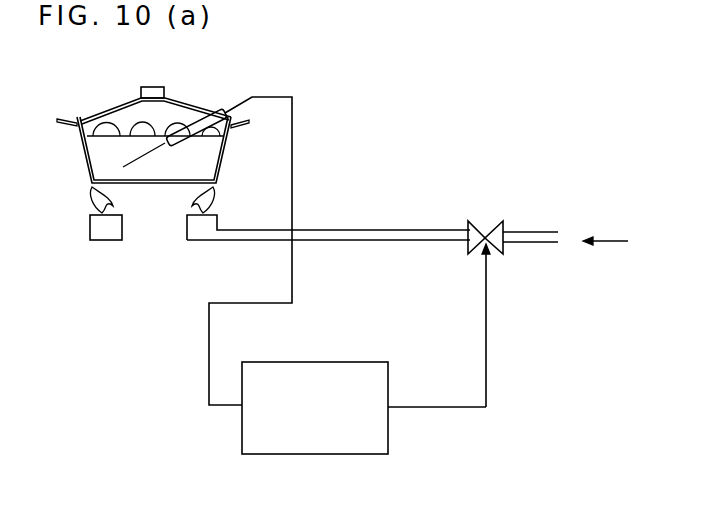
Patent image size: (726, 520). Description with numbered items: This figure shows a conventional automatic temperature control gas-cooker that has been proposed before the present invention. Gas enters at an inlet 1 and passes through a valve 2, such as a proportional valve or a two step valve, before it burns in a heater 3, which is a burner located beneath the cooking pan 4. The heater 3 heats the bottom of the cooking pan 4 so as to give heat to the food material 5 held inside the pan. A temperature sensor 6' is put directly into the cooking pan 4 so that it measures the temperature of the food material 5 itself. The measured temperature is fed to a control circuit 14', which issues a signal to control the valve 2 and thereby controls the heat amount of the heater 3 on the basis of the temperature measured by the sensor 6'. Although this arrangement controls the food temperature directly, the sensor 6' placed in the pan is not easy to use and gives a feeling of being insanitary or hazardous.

The inlet 1 is at (562, 233).
The valve 2 is at (486, 238).
The heater 3 is at (98, 232).
The cooking pan 4 is at (222, 155).
The food material 5 is at (97, 155).
The temperature sensor 6' is at (207, 225).
The control circuit 14' is at (364, 432).